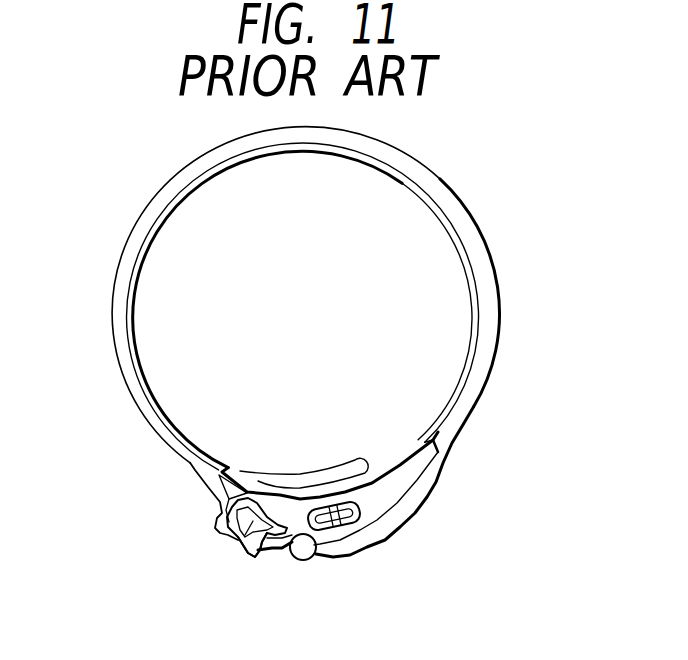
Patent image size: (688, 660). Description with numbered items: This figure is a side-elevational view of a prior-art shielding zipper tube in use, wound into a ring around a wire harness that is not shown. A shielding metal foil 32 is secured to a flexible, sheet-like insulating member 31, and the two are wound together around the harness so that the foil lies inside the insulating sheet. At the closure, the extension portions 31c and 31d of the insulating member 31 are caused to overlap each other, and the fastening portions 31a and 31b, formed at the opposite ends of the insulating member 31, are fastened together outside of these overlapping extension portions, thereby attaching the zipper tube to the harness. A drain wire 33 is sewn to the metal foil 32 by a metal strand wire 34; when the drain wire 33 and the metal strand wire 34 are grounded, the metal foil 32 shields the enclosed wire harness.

The insulating member 31 is at (142, 415).
The metal foil 32 is at (467, 275).
The fastening portion 31a is at (215, 528).
The fastening portion 31b is at (238, 548).
The extension portion 31c is at (421, 448).
The extension portion 31d is at (281, 483).
The drain wire 33 is at (360, 519).
The metal strand wire 34 is at (313, 538).